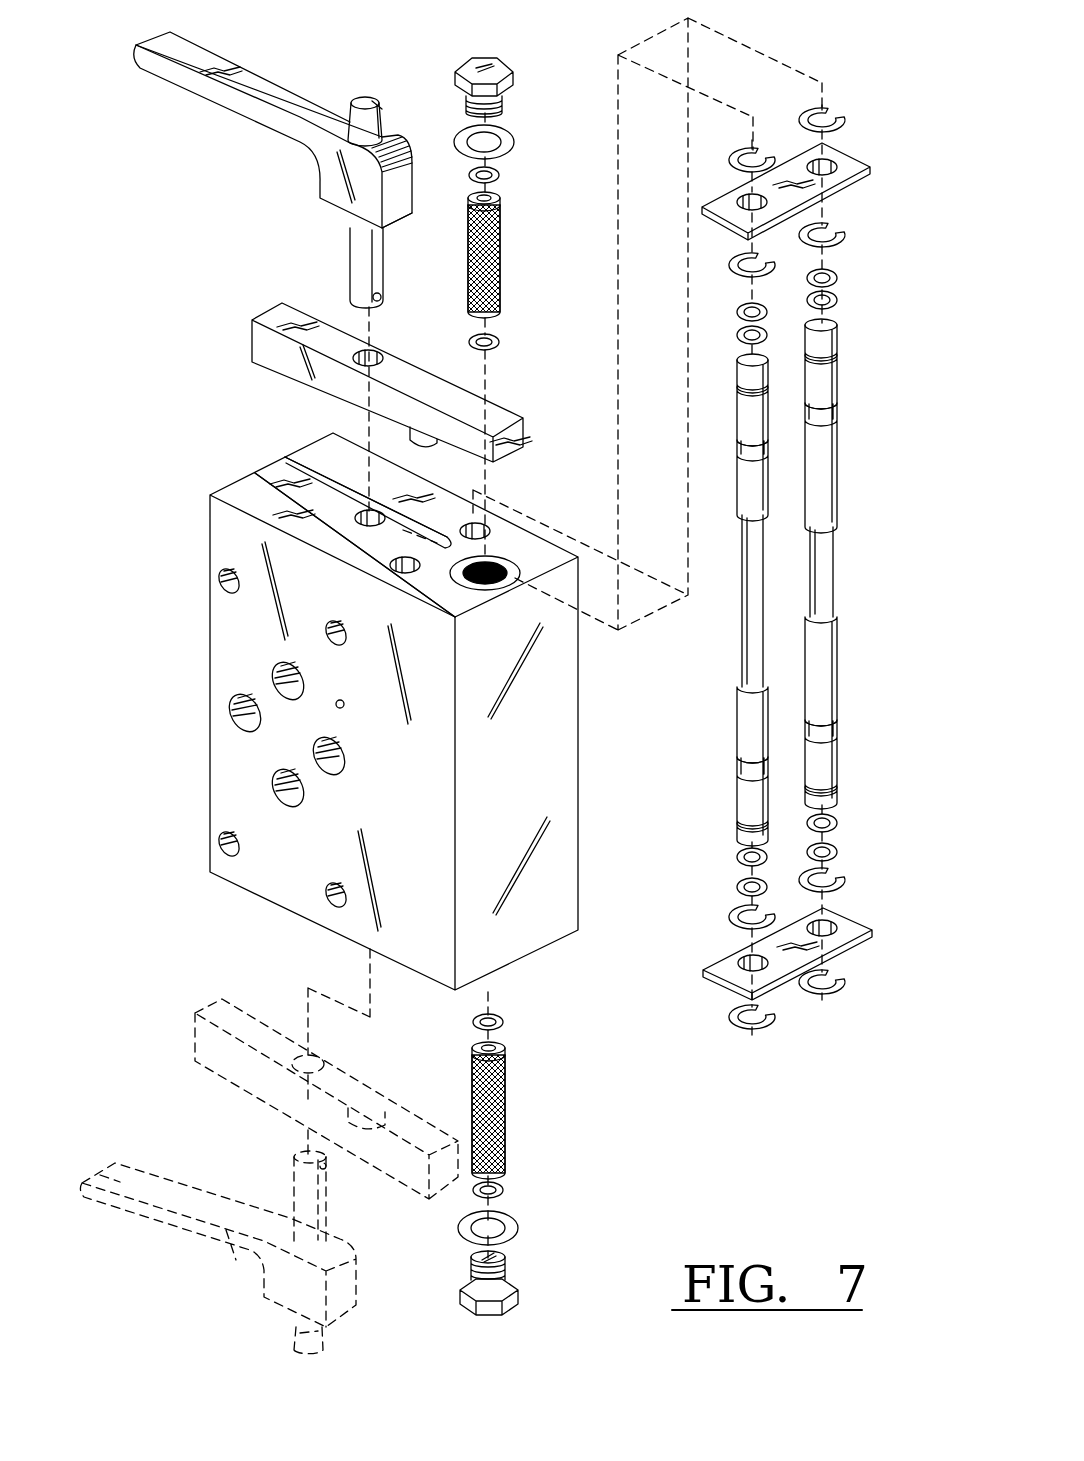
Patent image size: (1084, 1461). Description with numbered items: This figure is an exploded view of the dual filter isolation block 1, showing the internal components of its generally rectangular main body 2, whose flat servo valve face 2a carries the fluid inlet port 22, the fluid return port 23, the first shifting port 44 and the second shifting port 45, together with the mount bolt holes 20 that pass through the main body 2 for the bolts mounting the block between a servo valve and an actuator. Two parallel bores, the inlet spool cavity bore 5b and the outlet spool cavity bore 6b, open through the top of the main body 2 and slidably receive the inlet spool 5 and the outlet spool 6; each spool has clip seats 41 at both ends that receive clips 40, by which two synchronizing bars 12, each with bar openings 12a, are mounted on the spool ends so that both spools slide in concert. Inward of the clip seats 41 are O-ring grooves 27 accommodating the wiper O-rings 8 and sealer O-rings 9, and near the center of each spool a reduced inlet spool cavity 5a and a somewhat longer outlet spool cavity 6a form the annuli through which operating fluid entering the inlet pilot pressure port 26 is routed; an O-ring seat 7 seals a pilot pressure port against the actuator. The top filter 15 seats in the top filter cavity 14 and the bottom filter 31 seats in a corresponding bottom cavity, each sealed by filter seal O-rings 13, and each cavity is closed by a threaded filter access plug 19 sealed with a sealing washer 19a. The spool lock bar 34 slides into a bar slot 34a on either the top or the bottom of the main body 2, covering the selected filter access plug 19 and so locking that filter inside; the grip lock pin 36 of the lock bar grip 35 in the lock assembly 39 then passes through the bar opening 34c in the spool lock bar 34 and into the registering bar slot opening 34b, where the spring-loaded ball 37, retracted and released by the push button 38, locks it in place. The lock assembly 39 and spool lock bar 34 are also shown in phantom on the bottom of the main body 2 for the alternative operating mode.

The dual filter isolation block 1 is at (892, 162).
The main body 2 is at (588, 838).
The servo valve face 2a is at (378, 836).
The inlet spool 5 is at (863, 564).
The inlet spool cavity 5a is at (834, 572).
The inlet spool cavity bore 5b is at (485, 524).
The outlet spool 6 is at (702, 600).
The outlet spool cavity 6a is at (744, 628).
The outlet spool cavity bore 6b is at (406, 574).
The O-ring seat 7 is at (503, 586).
The wiper O-rings 8 is at (838, 280).
The sealer O-rings 9 is at (838, 302).
The synchronizing bar 12 is at (848, 170).
The bar openings 12a is at (830, 164).
The filter seal O-rings 13 is at (500, 172).
The top filter cavity 14 is at (492, 562).
The top filter 15 is at (502, 248).
The filter access plug 19 is at (500, 68).
The sealing washer 19a is at (512, 140).
The mount bolt holes 20 is at (229, 594).
The fluid inlet port 22 is at (340, 760).
The fluid return port 23 is at (236, 714).
The inlet pilot pressure port 26 is at (345, 705).
The O-ring grooves 27 is at (738, 448).
The bottom filter 31 is at (507, 1100).
The spool lock bar 34 is at (340, 751).
The bar slot 34a is at (279, 468).
The bar slot opening 34b is at (366, 526).
The bar opening 34c is at (372, 351).
The lock bar grip 35 is at (216, 50).
The grip lock pin 36 is at (366, 238).
The spring-loaded ball 37 is at (372, 296).
The push button 38 is at (368, 100).
The lock assembly 39 is at (293, 156).
The clips 40 is at (832, 110).
The clip seats 41 is at (840, 356).
The first shifting port 44 is at (282, 788).
The second shifting port 45 is at (300, 676).